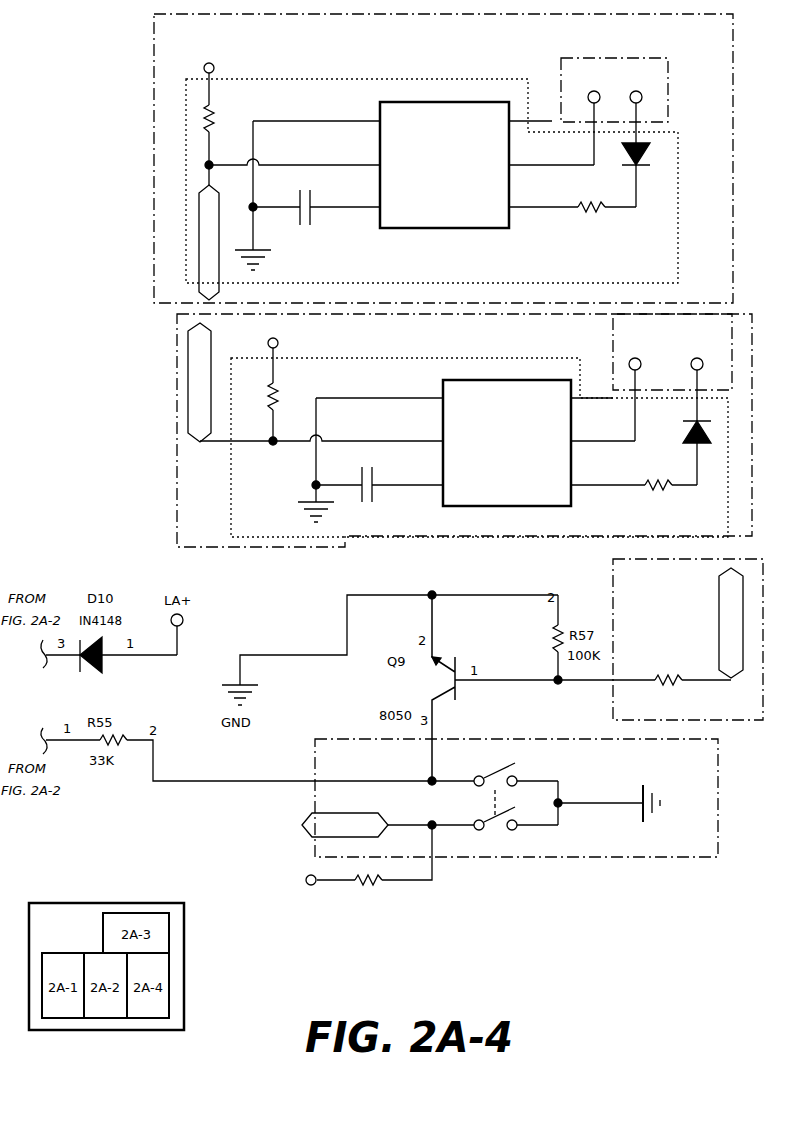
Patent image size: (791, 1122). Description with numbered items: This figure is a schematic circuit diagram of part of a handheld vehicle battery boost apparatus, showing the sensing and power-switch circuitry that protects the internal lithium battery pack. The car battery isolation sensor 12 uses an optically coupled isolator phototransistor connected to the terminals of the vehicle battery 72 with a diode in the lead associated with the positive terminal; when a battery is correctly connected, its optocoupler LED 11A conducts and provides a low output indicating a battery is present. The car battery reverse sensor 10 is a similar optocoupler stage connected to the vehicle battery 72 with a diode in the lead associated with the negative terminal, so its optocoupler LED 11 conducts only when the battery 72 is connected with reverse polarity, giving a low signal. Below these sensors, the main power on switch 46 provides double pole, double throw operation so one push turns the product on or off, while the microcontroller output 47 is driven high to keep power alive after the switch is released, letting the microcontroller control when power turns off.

The car battery reverse sensor 10 is at (177, 512).
The optocoupler LED 11 is at (358, 358).
The optocoupler LED 11A is at (326, 80).
The car battery isolation sensor 12 is at (153, 178).
The main power on switch 46 is at (630, 858).
The microcontroller output 47 is at (613, 580).
The vehicle battery 72 is at (561, 95).